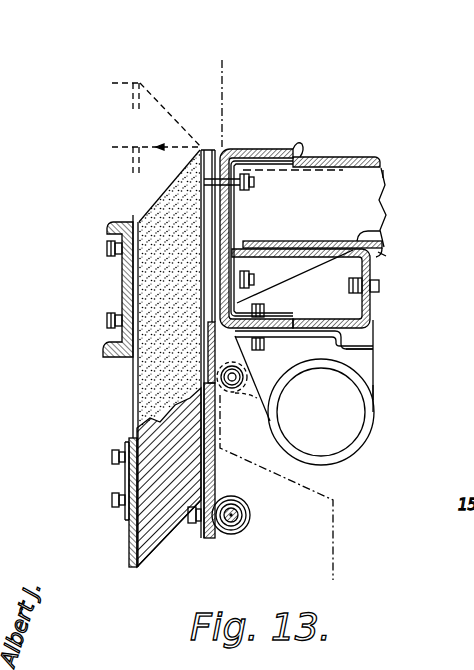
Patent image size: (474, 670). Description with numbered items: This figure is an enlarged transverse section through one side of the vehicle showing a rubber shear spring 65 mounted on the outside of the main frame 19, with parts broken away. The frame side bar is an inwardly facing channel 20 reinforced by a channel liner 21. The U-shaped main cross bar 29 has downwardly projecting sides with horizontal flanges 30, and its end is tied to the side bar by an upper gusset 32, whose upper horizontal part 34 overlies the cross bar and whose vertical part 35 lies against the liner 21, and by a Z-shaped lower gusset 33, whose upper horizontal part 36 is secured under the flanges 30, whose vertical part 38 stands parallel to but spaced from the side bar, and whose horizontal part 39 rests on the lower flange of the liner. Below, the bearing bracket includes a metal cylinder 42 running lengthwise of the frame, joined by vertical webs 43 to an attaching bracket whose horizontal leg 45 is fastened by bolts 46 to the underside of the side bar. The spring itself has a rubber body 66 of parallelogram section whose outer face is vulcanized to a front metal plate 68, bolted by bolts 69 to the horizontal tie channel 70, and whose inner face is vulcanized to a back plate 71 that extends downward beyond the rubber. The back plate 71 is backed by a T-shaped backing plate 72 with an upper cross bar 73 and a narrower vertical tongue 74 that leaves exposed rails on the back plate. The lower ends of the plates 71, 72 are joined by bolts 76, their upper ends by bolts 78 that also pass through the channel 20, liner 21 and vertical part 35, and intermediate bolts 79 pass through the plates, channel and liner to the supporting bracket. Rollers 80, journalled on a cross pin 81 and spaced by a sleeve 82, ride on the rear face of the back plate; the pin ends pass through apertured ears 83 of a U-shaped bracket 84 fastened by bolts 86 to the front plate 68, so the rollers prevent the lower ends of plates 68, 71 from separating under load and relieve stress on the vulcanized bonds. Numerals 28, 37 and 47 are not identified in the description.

The main frame 19 is at (260, 139).
The channel 20 is at (272, 152).
The channel liner 21 is at (300, 146).
The channel interior 28 is at (366, 172).
The main cross bar 29 is at (387, 172).
The horizontal flange 30 is at (358, 233).
The upper gusset 32 is at (390, 153).
The lower gusset 33 is at (382, 257).
The upper horizontal part 34 is at (352, 158).
The vertical part 35 is at (233, 208).
The upper horizontal part 36 is at (384, 252).
The bottom band 37 is at (321, 235).
The vertical part 38 is at (372, 300).
The horizontal part 39 is at (373, 348).
The metal cylinder 42 is at (364, 453).
The vertical web 43 is at (362, 363).
The horizontal leg 45 is at (280, 336).
The bolt 46 is at (267, 301).
The plate edge 47 is at (386, 393).
The rubber shear spring 65 is at (133, 201).
The rubber body 66 is at (168, 97).
The metal plate 68 is at (137, 393).
The bolt 69 is at (107, 248).
The tie plate 70 is at (112, 83).
The back plate 71 is at (201, 346).
The backing plate 72 is at (191, 226).
The upper cross bar 73 is at (215, 202).
The vertical bar 74 is at (190, 78).
The bolt 76 is at (187, 526).
The bolt 78 is at (280, 177).
The bolt 79 is at (255, 277).
The roller 80 is at (247, 400).
The cross pin 81 is at (250, 500).
The spacing sleeve 82 is at (240, 517).
The apertured ear 83 is at (173, 522).
The U-shaped bracket 84 is at (125, 485).
The bolt 86 is at (112, 457).